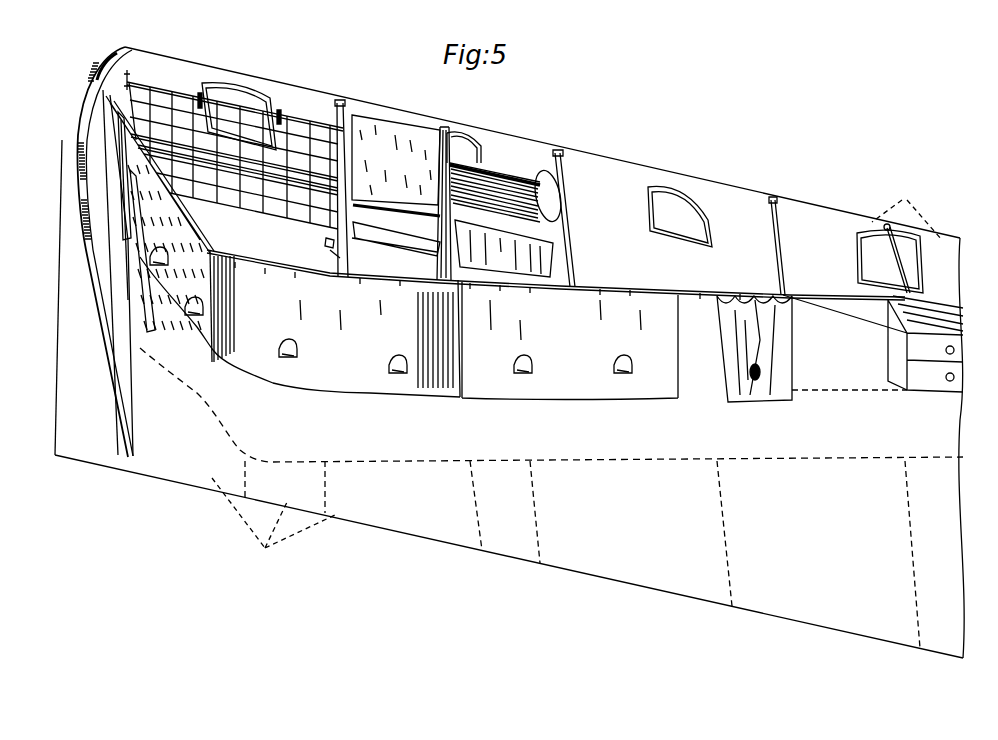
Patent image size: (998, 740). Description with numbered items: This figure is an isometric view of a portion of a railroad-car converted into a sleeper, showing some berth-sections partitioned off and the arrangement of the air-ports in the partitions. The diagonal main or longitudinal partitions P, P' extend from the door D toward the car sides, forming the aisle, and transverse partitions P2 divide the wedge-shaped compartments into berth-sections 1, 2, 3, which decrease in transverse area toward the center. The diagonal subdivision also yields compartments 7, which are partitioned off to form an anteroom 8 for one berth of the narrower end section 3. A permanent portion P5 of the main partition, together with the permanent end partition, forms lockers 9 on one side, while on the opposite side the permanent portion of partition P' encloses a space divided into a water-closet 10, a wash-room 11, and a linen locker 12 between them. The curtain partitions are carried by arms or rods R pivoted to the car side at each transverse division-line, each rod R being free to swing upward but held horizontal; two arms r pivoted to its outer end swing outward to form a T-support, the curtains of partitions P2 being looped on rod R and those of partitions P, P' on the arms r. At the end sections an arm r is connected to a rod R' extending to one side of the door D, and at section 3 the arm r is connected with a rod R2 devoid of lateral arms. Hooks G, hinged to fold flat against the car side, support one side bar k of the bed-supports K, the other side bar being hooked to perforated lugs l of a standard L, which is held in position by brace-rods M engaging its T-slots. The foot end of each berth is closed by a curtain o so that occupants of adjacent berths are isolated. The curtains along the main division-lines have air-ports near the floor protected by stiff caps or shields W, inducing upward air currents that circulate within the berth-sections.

The hook G is at (233, 100).
The bed-support K is at (233, 155).
The side bar k is at (234, 168).
The rod R' is at (160, 174).
The arm or rod R is at (462, 193).
The rod R2 is at (894, 262).
The arm r is at (556, 274).
The perforated lug or ear l is at (321, 237).
The standard L is at (325, 255).
The brace-rod M is at (396, 185).
The curtain o is at (481, 214).
The main or longitudinal partition P is at (558, 333).
The main or longitudinal partition P' is at (551, 405).
The transverse partition P2 is at (584, 422).
The permanent portion of main partition P5 is at (617, 428).
The cap or shield W is at (191, 294).
The door D is at (152, 282).
The berth-section 1 is at (599, 391).
The berth-section 2 is at (617, 400).
The berth-section 3 is at (626, 398).
The compartment or section 7 is at (577, 376).
The anteroom or compartment 8 is at (669, 430).
The locker 9 is at (873, 343).
The compartment 10 is at (181, 443).
The compartment 11 is at (282, 483).
The compartment 12 is at (395, 498).